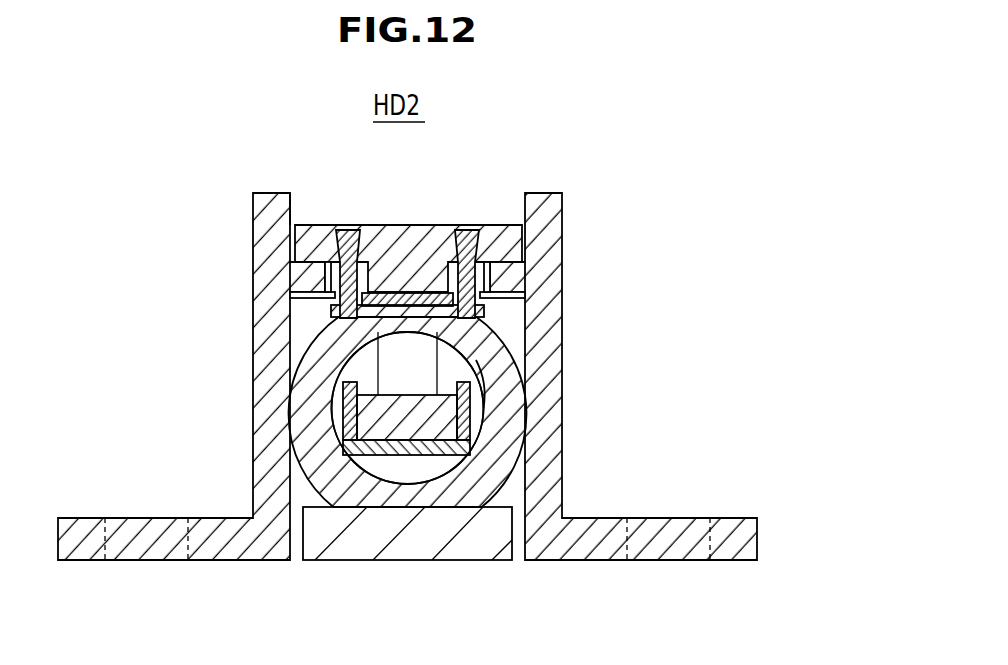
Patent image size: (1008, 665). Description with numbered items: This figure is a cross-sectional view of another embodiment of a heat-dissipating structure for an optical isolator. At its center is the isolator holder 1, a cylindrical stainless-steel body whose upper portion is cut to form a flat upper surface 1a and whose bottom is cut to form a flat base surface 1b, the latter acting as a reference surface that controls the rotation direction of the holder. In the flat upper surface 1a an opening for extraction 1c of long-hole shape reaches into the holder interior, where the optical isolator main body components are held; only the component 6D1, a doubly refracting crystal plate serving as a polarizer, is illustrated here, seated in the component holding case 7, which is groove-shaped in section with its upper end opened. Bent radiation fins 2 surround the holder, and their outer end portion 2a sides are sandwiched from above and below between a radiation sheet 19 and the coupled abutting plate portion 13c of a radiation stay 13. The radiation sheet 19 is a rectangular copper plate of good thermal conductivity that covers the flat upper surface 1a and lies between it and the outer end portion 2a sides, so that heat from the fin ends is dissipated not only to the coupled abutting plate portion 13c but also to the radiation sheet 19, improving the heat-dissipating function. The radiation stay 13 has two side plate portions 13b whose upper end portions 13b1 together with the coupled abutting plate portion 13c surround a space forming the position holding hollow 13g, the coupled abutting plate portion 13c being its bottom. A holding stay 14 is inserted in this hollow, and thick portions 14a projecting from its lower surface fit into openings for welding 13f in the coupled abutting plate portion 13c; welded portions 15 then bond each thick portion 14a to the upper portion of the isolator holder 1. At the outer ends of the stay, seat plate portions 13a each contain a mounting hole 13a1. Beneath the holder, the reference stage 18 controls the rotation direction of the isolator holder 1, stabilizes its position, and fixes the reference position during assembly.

The isolator holder 1 is at (424, 415).
The flat upper surface 1a is at (383, 325).
The flat base surface 1b is at (450, 507).
The opening for extraction 1c is at (397, 360).
The radiation fins 2 is at (397, 375).
The outer end portion 2a is at (500, 362).
The component 6D1 is at (430, 412).
The component holding case 7 is at (455, 450).
The radiation stay 13 is at (417, 375).
The seat plate portion 13a is at (417, 578).
The mounting hole 13a1 is at (170, 562).
The side plate portion 13b is at (268, 426).
The upper end portion 13b1 is at (262, 218).
The coupled abutting plate portion 13c is at (513, 270).
The opening for welding 13f is at (332, 302).
The position holding hollow 13g is at (312, 209).
The holding stay 14 is at (400, 224).
The thick portion 14a is at (328, 275).
The welded portion 15 is at (348, 245).
The reference stage 18 is at (355, 553).
The radiation sheet 19 is at (485, 310).